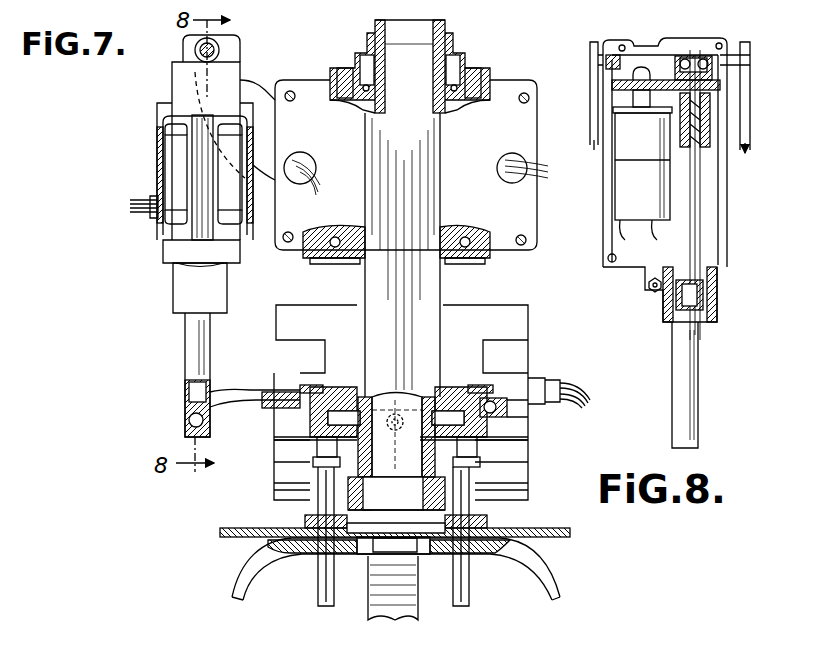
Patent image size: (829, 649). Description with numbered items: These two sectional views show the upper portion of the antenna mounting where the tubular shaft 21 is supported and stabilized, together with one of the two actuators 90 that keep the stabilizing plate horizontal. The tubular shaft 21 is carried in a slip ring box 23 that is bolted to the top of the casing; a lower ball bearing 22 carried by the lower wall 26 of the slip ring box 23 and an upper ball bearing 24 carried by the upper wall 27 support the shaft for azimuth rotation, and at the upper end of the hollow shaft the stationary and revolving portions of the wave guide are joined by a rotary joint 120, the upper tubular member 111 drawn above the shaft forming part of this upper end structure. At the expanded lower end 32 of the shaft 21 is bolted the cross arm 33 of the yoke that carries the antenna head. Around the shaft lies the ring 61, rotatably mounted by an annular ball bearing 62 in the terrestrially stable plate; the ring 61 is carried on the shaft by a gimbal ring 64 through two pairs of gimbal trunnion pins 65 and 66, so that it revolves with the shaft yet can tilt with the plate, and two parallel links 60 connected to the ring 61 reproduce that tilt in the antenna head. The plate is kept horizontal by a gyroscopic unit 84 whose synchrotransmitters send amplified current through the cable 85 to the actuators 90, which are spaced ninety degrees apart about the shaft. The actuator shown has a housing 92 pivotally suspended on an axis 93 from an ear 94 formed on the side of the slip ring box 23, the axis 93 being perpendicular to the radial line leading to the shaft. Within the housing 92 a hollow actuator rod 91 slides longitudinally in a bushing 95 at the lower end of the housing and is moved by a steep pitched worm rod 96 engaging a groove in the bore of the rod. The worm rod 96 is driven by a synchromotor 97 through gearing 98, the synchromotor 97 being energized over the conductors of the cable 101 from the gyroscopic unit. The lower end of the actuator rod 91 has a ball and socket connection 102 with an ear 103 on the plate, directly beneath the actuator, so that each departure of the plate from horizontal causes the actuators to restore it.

In FIG. 7, the tubular shaft 21 is at (365, 106).
In FIG. 7, the lower ball bearing 22 is at (336, 260).
In FIG. 7, the slip ring box 23 is at (495, 132).
In FIG. 7, the upper ball bearing 24 is at (468, 78).
In FIG. 7, the lower wall 26 is at (520, 258).
In FIG. 7, the upper wall 27 is at (333, 82).
In FIG. 7, the expanded lower end 32 is at (312, 522).
In FIG. 7, the cross arm 33 is at (312, 555).
In FIG. 7, the parallel links 60 is at (316, 600).
In FIG. 7, the ring 61 is at (495, 433).
In FIG. 7, the annular ball bearing 62 is at (297, 410).
In FIG. 7, the gimbal ring 64 is at (336, 446).
In FIG. 7, the gimbal trunnion pins 65 is at (394, 470).
In FIG. 7, the gimbal trunnion pins 66 is at (340, 414).
In FIG. 7, the gyroscopic unit 84 is at (520, 323).
In FIG. 7, the cable 85 is at (580, 392).
In FIG. 7, the actuator 90 is at (152, 157).
In FIG. 8, the actuator 90 is at (728, 202).
In FIG. 7, the actuator rod 91 is at (188, 342).
In FIG. 8, the actuator rod 91 is at (698, 414).
In FIG. 7, the housing 92 is at (178, 86).
In FIG. 8, the housing 92 is at (718, 248).
In FIG. 7, the axis 93 is at (216, 52).
In FIG. 8, the axis 93 is at (618, 62).
In FIG. 7, the ear 94 is at (266, 90).
In FIG. 8, the bushing 95 is at (705, 290).
In FIG. 8, the worm rod 96 is at (700, 137).
In FIG. 8, the synchromotor 97 is at (626, 146).
In FIG. 8, the gearing 98 is at (681, 56).
In FIG. 7, the cable 101 is at (143, 196).
In FIG. 7, the ball and socket connection 102 is at (190, 422).
In FIG. 7, the ear 103 is at (228, 393).
In FIG. 7, the upper tube 111 is at (445, 33).
In FIG. 7, the rotary joint 120 is at (400, 44).